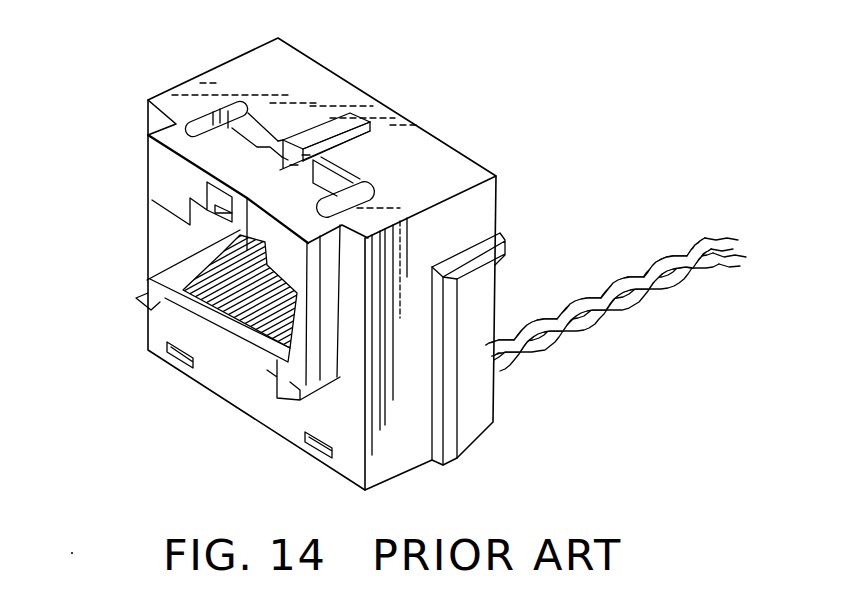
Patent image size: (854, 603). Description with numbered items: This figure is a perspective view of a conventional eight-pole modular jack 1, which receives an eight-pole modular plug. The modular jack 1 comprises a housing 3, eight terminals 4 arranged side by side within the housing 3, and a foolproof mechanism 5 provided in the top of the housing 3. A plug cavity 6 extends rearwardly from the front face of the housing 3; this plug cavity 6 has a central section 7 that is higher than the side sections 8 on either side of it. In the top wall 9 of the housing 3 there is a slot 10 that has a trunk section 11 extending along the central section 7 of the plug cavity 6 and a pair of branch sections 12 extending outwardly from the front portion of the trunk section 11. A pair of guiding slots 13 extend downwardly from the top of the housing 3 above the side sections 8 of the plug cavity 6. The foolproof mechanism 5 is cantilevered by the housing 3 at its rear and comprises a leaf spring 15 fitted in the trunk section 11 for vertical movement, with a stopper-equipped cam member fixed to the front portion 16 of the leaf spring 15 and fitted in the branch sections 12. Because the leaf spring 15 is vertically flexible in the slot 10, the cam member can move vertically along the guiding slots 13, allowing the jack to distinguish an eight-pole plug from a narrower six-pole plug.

The eight-pole modular jack 1 is at (487, 148).
The housing 3 is at (496, 211).
The terminals 4 is at (263, 305).
The foolproof mechanism 5 is at (325, 149).
The plug cavity 6 is at (177, 244).
The central section 7 is at (240, 230).
The side sections 8 is at (168, 231).
The top wall 9 is at (200, 107).
The slot 10 is at (333, 132).
The trunk section 11 is at (336, 148).
The branch sections 12 is at (270, 124).
The guiding slots 13 is at (332, 176).
The leaf spring 15 is at (306, 155).
The front portion 16 is at (294, 166).